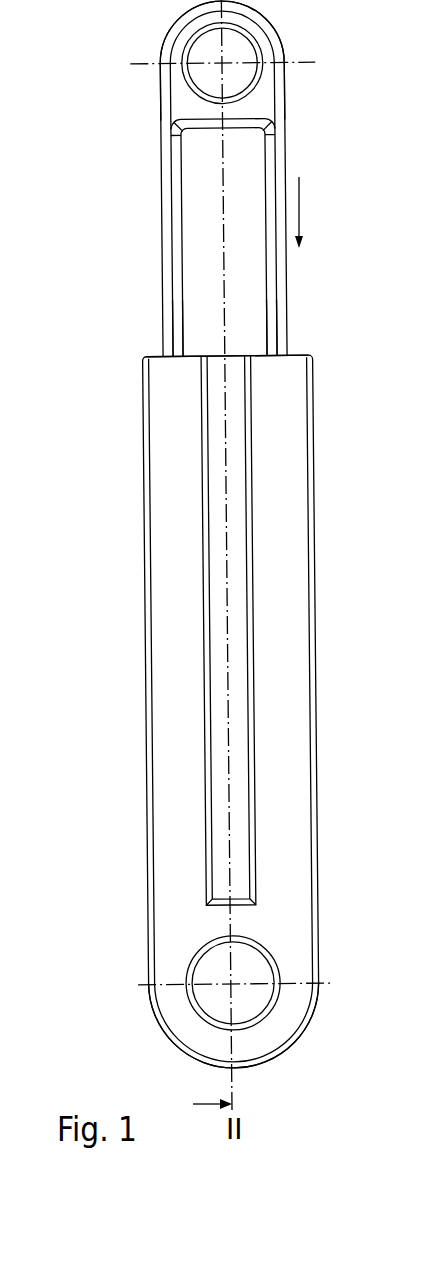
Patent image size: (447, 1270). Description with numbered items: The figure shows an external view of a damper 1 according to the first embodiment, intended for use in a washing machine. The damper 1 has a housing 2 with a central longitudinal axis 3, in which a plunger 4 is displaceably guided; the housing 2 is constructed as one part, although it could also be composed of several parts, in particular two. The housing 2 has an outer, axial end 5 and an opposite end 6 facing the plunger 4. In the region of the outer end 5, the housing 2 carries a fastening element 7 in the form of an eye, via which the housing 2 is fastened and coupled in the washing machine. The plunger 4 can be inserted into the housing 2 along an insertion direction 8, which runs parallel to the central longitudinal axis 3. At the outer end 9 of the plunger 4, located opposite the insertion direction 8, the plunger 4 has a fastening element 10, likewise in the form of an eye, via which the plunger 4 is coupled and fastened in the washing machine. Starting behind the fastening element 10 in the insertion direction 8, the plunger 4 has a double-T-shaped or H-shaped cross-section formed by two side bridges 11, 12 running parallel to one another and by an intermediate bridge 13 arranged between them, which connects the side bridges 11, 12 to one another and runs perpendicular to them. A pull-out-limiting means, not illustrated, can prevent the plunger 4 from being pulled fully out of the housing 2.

The damper 1 is at (116, 618).
The housing 2 is at (135, 552).
The central longitudinal axis 3 is at (215, 255).
The plunger 4 is at (150, 147).
The outer axial end 5 is at (148, 950).
The end facing the plunger 6 is at (150, 351).
The fastening element 7 is at (203, 994).
The insertion direction 8 is at (300, 209).
The outer end of the plunger 9 is at (160, 83).
The fastening element 10 is at (200, 50).
The side bridge 11 is at (172, 325).
The side bridge 12 is at (277, 322).
The intermediate bridge 13 is at (192, 222).